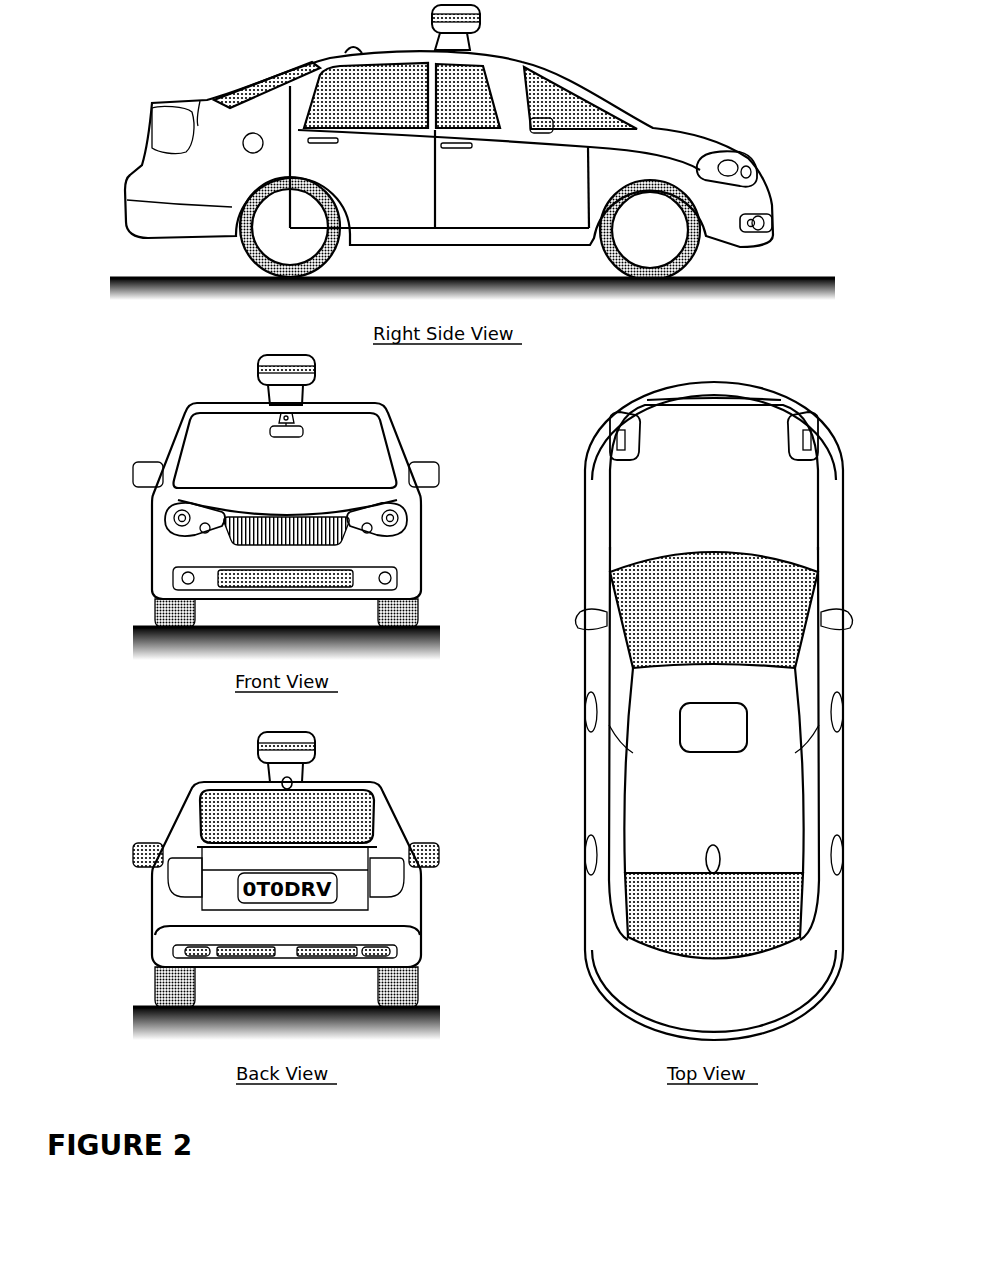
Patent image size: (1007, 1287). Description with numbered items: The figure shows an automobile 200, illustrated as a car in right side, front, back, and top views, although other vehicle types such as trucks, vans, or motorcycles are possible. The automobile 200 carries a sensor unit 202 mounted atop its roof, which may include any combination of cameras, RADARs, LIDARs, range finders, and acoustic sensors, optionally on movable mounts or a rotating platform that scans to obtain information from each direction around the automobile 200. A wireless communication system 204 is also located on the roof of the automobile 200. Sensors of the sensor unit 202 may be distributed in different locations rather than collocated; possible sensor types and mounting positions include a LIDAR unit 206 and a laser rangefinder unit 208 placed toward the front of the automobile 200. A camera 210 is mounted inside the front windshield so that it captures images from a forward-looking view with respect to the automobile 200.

The automobile 200 is at (118, 92).
The sensor unit 202 is at (481, 24).
The wireless communication system 204 is at (350, 47).
The LIDAR unit 206 is at (772, 223).
The laser rangefinder unit 208 is at (752, 173).
The camera 210 is at (298, 418).